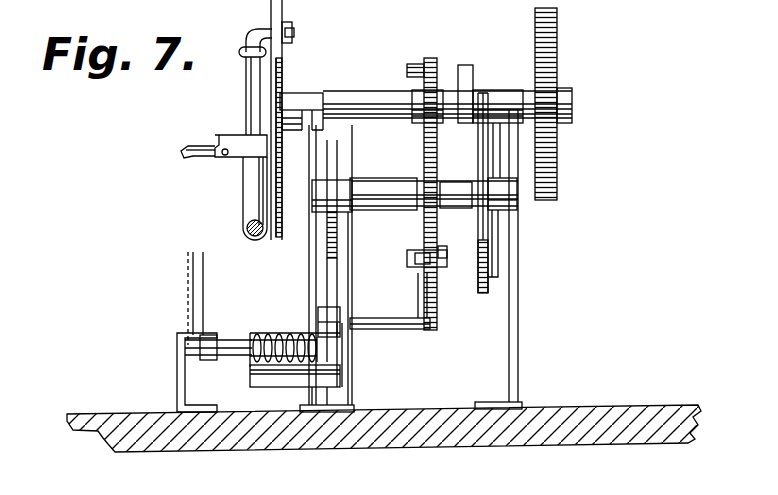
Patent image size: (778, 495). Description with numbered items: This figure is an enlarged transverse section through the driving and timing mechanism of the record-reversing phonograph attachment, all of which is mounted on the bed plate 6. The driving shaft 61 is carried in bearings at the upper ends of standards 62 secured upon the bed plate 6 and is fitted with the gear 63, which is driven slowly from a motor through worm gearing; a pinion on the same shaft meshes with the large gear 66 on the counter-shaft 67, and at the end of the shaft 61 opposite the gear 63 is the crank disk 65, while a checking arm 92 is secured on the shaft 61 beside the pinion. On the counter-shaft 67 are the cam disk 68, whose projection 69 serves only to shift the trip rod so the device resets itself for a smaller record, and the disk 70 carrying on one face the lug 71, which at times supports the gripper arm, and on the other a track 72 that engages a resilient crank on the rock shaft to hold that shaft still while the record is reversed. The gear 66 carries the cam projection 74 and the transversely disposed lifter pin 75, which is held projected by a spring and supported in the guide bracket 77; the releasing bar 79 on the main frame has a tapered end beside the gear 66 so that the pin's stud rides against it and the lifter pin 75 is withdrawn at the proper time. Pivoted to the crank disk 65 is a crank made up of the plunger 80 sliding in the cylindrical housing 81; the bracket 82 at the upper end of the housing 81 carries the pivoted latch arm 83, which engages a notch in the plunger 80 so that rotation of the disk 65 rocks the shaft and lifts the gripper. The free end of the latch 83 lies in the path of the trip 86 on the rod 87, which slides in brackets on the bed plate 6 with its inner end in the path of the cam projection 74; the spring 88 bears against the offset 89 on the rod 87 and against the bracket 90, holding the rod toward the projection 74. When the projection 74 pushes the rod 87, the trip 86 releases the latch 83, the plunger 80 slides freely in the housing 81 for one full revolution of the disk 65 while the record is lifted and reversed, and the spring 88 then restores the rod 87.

The bed plate 6 is at (604, 420).
The driving shaft 61 is at (353, 100).
The standards or posts 62 is at (308, 160).
The gear 63 is at (558, 184).
The crank disk 65 is at (283, 66).
The large gear 66 is at (437, 307).
The counter-shaft 67 is at (373, 190).
The cam disk 68 is at (337, 150).
The projection 69 is at (313, 208).
The disk 70 is at (488, 240).
The lug 71 is at (473, 120).
The track 72 is at (498, 261).
The cam projection 74 is at (422, 288).
The lifter pin 75 is at (455, 240).
The guide bracket 77 is at (408, 262).
The releasing bar 79 is at (411, 65).
The plunger 80 is at (247, 90).
The cylindrical housing 81 is at (243, 189).
The lateral extension or bracket 82 is at (226, 135).
The latch arm 83 is at (190, 149).
The trip 86 is at (204, 293).
The rod 87 is at (232, 357).
The spring 88 is at (270, 336).
The offset 89 is at (330, 307).
The bracket 90 is at (270, 378).
The checking arm 92 is at (477, 50).